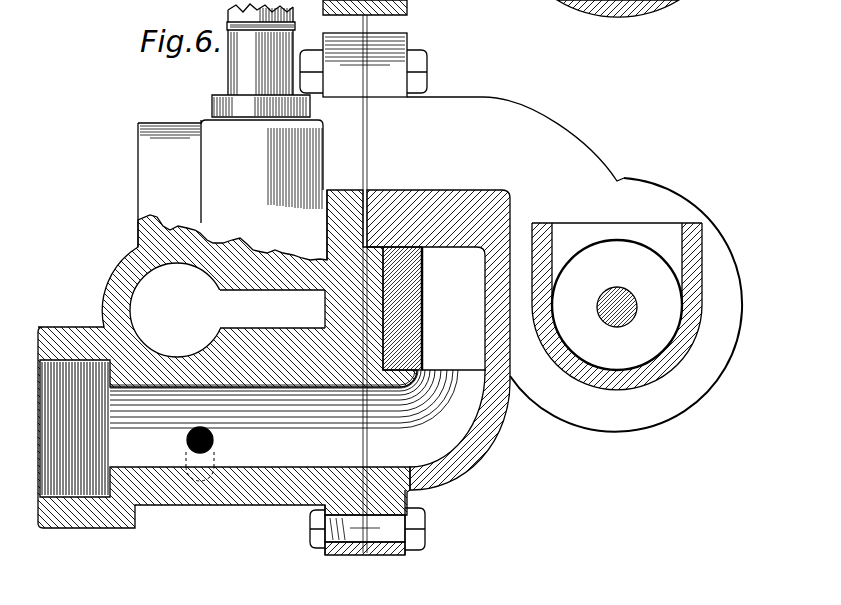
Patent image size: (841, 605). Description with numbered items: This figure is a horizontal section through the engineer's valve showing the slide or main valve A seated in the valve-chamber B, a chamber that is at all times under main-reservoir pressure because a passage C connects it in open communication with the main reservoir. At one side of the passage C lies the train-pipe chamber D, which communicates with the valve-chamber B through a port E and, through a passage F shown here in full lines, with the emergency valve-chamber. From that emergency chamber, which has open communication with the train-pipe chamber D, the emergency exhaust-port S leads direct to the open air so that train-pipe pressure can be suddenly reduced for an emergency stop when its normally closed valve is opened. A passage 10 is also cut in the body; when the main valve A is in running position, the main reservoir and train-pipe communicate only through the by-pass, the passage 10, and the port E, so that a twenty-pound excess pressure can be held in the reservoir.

The slide or main valve A is at (413, 308).
The valve-chamber B is at (454, 332).
The passage C is at (453, 443).
The train-pipe chamber D is at (177, 310).
The port E is at (335, 259).
The passage F is at (617, 307).
The emergency exhaust-port S is at (579, 227).
The passage 10 is at (213, 439).